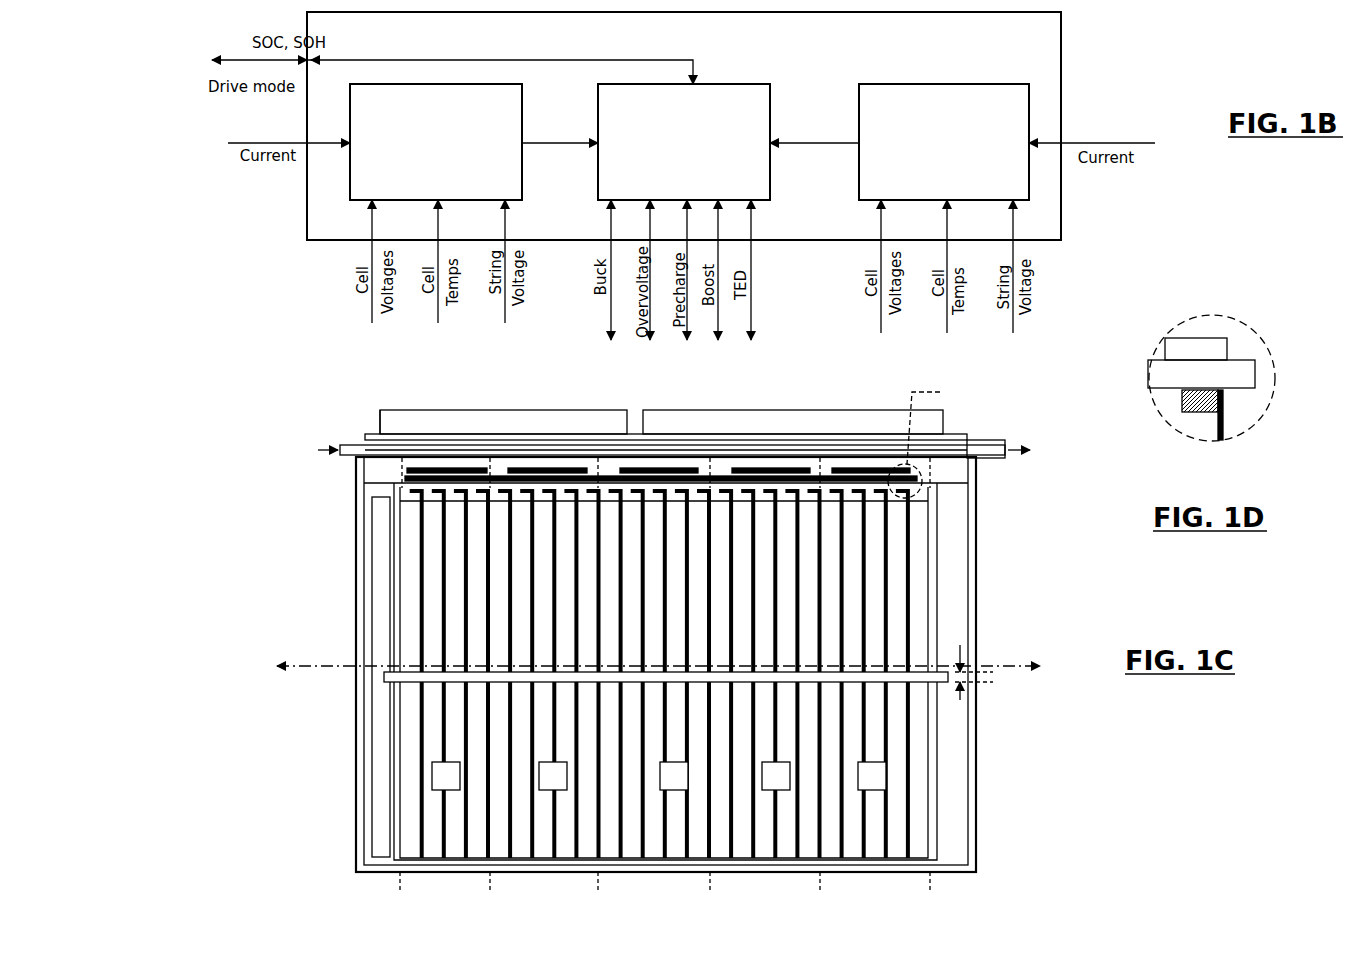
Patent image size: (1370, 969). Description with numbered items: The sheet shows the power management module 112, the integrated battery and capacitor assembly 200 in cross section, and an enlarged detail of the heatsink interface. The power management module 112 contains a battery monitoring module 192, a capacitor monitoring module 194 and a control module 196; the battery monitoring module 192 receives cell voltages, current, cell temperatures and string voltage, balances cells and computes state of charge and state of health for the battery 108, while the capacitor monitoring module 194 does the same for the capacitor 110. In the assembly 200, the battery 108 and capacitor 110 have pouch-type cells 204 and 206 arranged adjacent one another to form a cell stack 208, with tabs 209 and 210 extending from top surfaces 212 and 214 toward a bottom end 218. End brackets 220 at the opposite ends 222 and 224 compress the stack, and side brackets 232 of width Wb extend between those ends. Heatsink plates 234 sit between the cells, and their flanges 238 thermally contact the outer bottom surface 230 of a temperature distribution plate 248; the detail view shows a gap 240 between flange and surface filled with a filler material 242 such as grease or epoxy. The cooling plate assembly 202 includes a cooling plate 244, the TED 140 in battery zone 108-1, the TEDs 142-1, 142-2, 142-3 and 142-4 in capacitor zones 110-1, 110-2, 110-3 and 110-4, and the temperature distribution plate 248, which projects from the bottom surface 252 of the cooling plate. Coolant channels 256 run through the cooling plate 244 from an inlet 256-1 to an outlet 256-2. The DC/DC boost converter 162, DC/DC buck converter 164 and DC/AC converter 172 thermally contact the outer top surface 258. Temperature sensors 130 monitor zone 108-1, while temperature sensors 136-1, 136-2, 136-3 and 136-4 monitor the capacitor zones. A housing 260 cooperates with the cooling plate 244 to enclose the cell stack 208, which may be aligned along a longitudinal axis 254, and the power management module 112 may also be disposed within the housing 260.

In FIG. 1B, the power management module 112 is at (1061, 65).
In FIG. 1C, the power management module 112 is at (372, 522).
In FIG. 1B, the battery monitoring module 192 is at (350, 183).
In FIG. 1B, the capacitor monitoring module 194 is at (859, 196).
In FIG. 1B, the control module 196 is at (598, 172).
In FIG. 1C, the battery and capacitor assembly 200 is at (273, 366).
In FIG. 1C, the cooling plate assembly 202 is at (480, 422).
In FIG. 1C, the TED 140 is at (418, 468).
In FIG. 1C, the TED 142-1 is at (537, 468).
In FIG. 1C, the TED 142-2 is at (660, 468).
In FIG. 1C, the TED 142-3 is at (760, 468).
In FIG. 1C, the TED 142-4 is at (868, 468).
In FIG. 1C, the DC/DC boost converter 162 is at (308, 410).
In FIG. 1C, the DC/DC buck converter 164 is at (380, 432).
In FIG. 1C, the DC/AC converter 172 is at (943, 420).
In FIG. 1C, the cooling plate 244 is at (365, 436).
In FIG. 1C, the coolant channels 256 is at (557, 447).
In FIG. 1C, the inlet 256-1 is at (318, 450).
In FIG. 1C, the outlet 256-2 is at (1032, 450).
In FIG. 1C, the outer top surface 258 is at (568, 440).
In FIG. 1C, the temperature distribution plate 248 is at (723, 473).
In FIG. 1C, the bottom surface 252 is at (968, 514).
In FIG. 1C, the outer bottom surface 230 is at (912, 484).
In FIG. 1D, the outer bottom surface 230 is at (1240, 390).
In FIG. 1C, the heatsink plates 234 is at (422, 582).
In FIG. 1C, the cells 204 is at (410, 610).
In FIG. 1C, the end brackets 220 is at (394, 653).
In FIG. 1C, the side brackets 232 is at (384, 673).
In FIG. 1C, the end 222 is at (397, 750).
In FIG. 1C, the top surfaces 212 is at (415, 797).
In FIG. 1C, the tabs 209 is at (410, 838).
In FIG. 1C, the housing 260 is at (357, 855).
In FIG. 1C, the cells 206 is at (918, 623).
In FIG. 1C, the cell stack 208 is at (934, 638).
In FIG. 1C, the end 224 is at (968, 727).
In FIG. 1C, the top surfaces 214 is at (925, 790).
In FIG. 1C, the tabs 210 is at (918, 842).
In FIG. 1C, the longitudinal axis 254 is at (1000, 668).
In FIG. 1C, the temperature sensors 130 is at (433, 790).
In FIG. 1C, the temperature sensor 136-1 is at (556, 790).
In FIG. 1C, the temperature sensor 136-2 is at (688, 790).
In FIG. 1C, the temperature sensor 136-3 is at (780, 790).
In FIG. 1C, the temperature sensor 136-4 is at (888, 790).
In FIG. 1C, the battery 108 is at (444, 901).
In FIG. 1C, the zone 108-1 is at (488, 875).
In FIG. 1C, the capacitor 110 is at (711, 901).
In FIG. 1C, the zone 110-1 is at (547, 884).
In FIG. 1C, the zone 110-2 is at (655, 884).
In FIG. 1C, the zone 110-3 is at (765, 884).
In FIG. 1C, the zone 110-4 is at (875, 884).
In FIG. 1C, the bottom end 218 is at (738, 903).
In FIG. 1D, the flange 238 is at (1200, 412).
In FIG. 1D, the gap 240 is at (1180, 402).
In FIG. 1D, the filler material 242 is at (1223, 407).